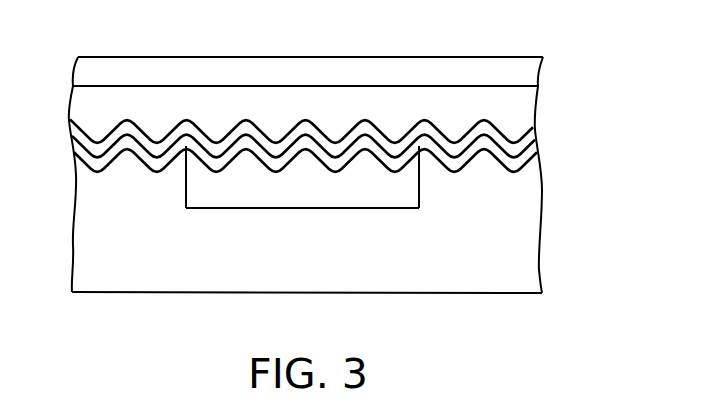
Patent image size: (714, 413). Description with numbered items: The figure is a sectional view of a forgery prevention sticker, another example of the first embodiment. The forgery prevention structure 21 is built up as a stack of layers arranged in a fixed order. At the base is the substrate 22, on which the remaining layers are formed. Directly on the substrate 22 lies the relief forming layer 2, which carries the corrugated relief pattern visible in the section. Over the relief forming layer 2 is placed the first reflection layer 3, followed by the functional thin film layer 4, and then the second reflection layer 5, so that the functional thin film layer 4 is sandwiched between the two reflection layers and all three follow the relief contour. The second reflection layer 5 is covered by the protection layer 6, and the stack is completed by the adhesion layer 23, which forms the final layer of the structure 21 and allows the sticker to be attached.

The forgery prevention structure 21 is at (564, 68).
The substrate 22 is at (477, 65).
The relief forming layer 2 is at (525, 108).
The first reflection layer 3 is at (528, 137).
The functional thin film layer 4 is at (528, 155).
The second reflection layer 5 is at (413, 178).
The protection layer 6 is at (400, 200).
The adhesion layer 23 is at (505, 280).